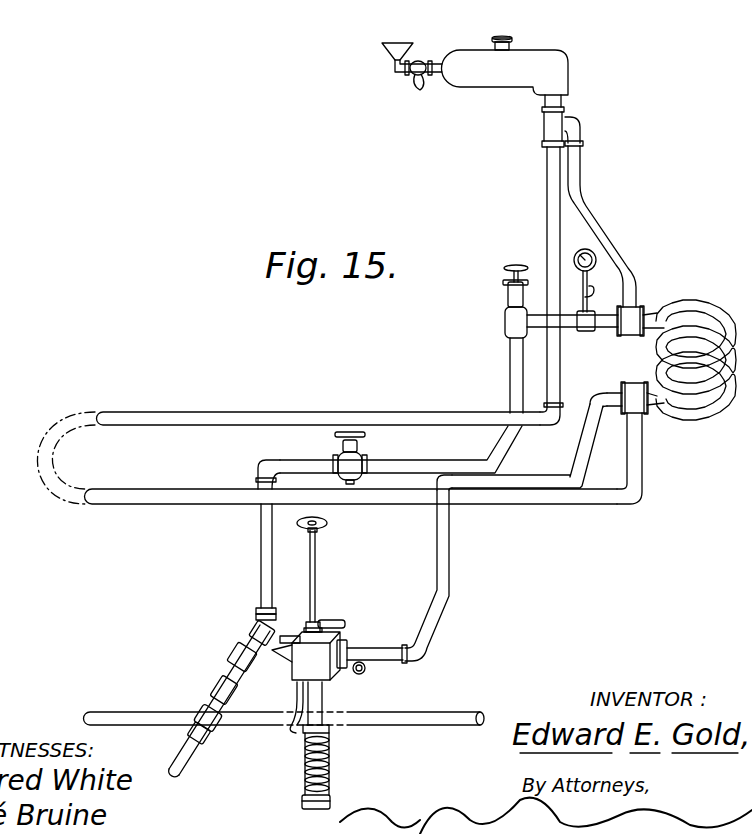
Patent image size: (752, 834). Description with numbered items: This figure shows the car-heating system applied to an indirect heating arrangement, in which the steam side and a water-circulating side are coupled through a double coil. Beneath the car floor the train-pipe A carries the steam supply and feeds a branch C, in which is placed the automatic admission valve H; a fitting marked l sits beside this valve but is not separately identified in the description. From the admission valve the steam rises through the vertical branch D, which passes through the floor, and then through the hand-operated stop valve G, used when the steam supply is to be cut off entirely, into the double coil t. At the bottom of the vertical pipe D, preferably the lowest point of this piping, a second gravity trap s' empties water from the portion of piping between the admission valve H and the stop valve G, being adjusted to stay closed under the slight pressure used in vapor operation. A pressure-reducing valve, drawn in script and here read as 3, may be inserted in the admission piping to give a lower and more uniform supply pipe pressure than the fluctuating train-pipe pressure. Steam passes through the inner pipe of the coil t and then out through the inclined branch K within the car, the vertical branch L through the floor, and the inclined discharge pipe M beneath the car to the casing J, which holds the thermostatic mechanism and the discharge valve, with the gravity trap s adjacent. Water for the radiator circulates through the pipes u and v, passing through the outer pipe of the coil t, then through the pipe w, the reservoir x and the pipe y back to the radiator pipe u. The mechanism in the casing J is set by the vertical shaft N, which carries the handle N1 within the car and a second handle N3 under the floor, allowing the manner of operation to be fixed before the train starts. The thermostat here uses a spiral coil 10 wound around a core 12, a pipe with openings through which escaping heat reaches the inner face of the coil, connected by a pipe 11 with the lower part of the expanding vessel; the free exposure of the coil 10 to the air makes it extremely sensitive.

The reservoir x is at (482, 91).
The pipe y is at (547, 222).
The pipe w is at (590, 212).
The double coil t is at (708, 316).
The hand-operated stop-valve G is at (505, 322).
The radiator pipe u is at (205, 417).
The pipe v is at (157, 495).
The pressure-reducing valve 3 is at (368, 466).
The inclined branch K is at (520, 473).
The vertical branch D is at (260, 532).
The second gravity trap s' is at (276, 590).
The automatic admission valve H is at (248, 638).
The lever l is at (283, 640).
The branch C is at (236, 667).
The train-pipe A is at (120, 711).
The coil 10 is at (324, 772).
The core 12 is at (322, 700).
The pipe 11 is at (297, 693).
The handle N3 is at (320, 622).
The casing J is at (347, 640).
The vertical shaft N is at (316, 594).
The handle N1 is at (328, 524).
The vertical branch L is at (450, 567).
The inclined branch M is at (395, 662).
The gravity trap s is at (366, 678).